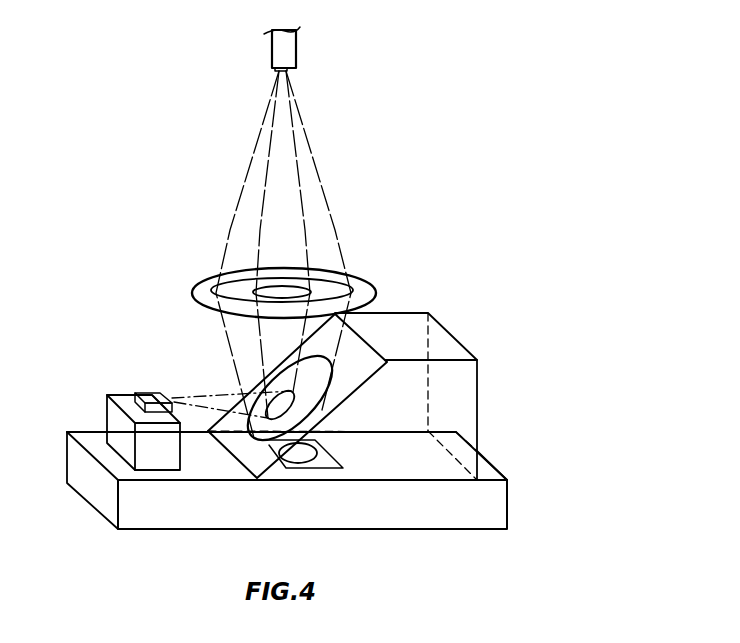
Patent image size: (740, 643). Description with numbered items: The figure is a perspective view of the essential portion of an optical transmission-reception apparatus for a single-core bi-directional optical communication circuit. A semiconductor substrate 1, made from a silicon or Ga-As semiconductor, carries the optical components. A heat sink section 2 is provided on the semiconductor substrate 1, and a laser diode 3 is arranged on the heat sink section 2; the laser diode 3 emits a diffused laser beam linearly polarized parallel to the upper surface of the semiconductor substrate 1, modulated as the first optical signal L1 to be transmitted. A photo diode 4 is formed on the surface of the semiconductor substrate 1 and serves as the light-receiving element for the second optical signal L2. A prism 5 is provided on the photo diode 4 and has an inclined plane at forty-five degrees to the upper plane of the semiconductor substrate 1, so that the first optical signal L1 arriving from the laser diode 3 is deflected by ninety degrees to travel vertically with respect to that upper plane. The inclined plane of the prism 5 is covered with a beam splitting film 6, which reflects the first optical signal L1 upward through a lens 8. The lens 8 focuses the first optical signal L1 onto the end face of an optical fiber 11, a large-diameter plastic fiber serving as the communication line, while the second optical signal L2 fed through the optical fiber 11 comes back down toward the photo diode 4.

The semiconductor substrate 1 is at (507, 503).
The heat sink section 2 is at (122, 398).
The laser diode 3 is at (148, 393).
The photo diode 4 is at (332, 457).
The prism 5 is at (477, 373).
The beam splitting film 6 is at (358, 364).
The lens 8 is at (370, 288).
The optical fiber 11 is at (297, 52).
The first optical signal L1 is at (265, 180).
The second optical signal L2 is at (320, 180).